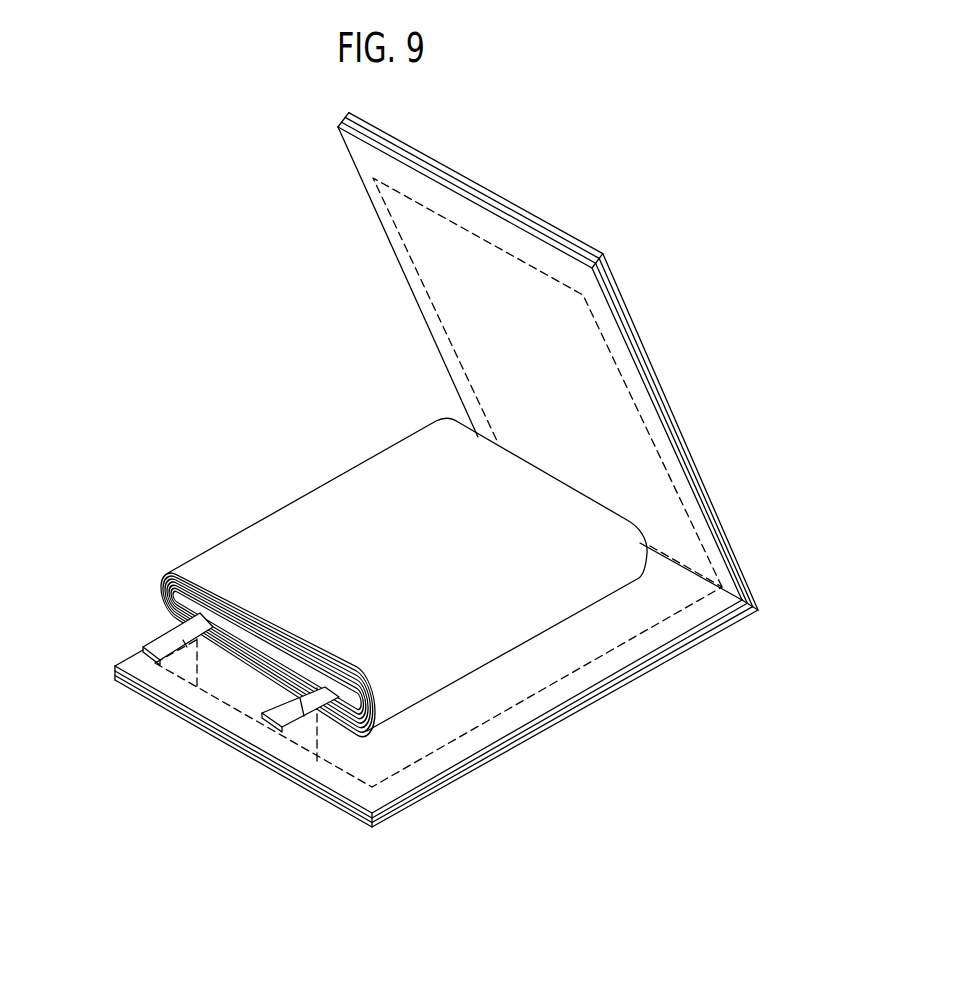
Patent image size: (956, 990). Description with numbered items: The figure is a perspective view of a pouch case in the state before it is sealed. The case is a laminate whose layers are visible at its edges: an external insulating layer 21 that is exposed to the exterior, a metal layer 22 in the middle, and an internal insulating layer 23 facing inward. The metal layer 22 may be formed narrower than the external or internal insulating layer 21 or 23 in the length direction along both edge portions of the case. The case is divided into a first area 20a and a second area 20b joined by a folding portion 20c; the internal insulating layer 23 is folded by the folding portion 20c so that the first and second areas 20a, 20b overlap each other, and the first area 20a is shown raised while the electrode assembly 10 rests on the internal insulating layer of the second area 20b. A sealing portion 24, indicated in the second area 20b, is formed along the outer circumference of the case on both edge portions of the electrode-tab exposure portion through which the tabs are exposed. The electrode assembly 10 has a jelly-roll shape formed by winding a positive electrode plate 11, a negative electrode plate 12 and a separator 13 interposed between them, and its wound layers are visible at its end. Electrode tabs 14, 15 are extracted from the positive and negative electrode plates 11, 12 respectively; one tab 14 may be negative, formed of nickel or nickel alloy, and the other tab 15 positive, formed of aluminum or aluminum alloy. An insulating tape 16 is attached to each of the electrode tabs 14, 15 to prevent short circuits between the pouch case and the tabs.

The electrode assembly 10 is at (354, 582).
The positive electrode plate 11 is at (172, 600).
The negative electrode plate 12 is at (165, 592).
The separator 13 is at (167, 582).
The electrode tab 14 is at (157, 643).
The electrode tab 15 is at (262, 713).
The insulating tape 16 is at (189, 656).
The first area 20a is at (655, 314).
The second area 20b is at (607, 711).
The folding portion 20c is at (691, 580).
The external insulating layer 21 is at (660, 387).
The metal layer 22 is at (662, 404).
The internal insulating layer 23 is at (667, 413).
The sealing portion 24 is at (438, 762).